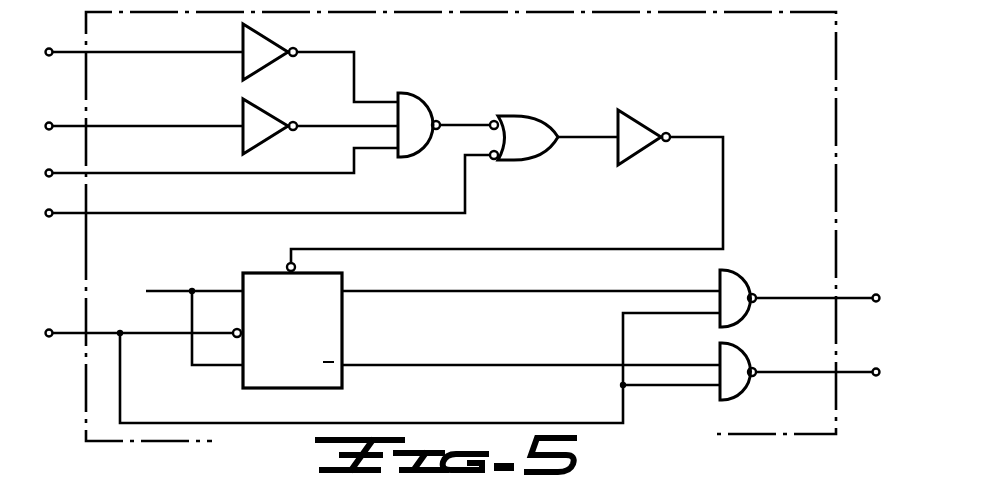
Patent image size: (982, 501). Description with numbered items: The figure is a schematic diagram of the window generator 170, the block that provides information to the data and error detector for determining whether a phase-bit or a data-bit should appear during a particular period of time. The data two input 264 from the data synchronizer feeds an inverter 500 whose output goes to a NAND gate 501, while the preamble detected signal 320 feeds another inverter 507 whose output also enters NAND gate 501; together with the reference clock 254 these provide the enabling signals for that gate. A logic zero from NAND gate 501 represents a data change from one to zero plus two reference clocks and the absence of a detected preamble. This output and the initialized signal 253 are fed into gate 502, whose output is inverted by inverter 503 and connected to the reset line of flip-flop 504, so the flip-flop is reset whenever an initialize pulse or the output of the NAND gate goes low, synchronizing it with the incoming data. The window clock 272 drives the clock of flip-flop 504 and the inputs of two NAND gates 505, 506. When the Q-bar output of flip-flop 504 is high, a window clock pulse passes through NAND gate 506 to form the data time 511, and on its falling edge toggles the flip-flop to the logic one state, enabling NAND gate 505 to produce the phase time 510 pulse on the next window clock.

The window generator 170 is at (828, 153).
The data 2 input 264 is at (46, 56).
The preamble detected signal 320 is at (46, 130).
The reference clock 254 is at (46, 175).
The initialized signal 253 is at (46, 216).
The window clock 272 is at (46, 338).
The inverter 500 is at (270, 64).
The inverter 507 is at (272, 137).
The NAND gate 501 is at (425, 105).
The gate 502 is at (543, 104).
The inverter 503 is at (647, 124).
The flip-flop 504 is at (267, 273).
The NAND gate 505 is at (734, 270).
The NAND gate 506 is at (734, 343).
The phase time 510 is at (876, 294).
The data time 511 is at (876, 368).